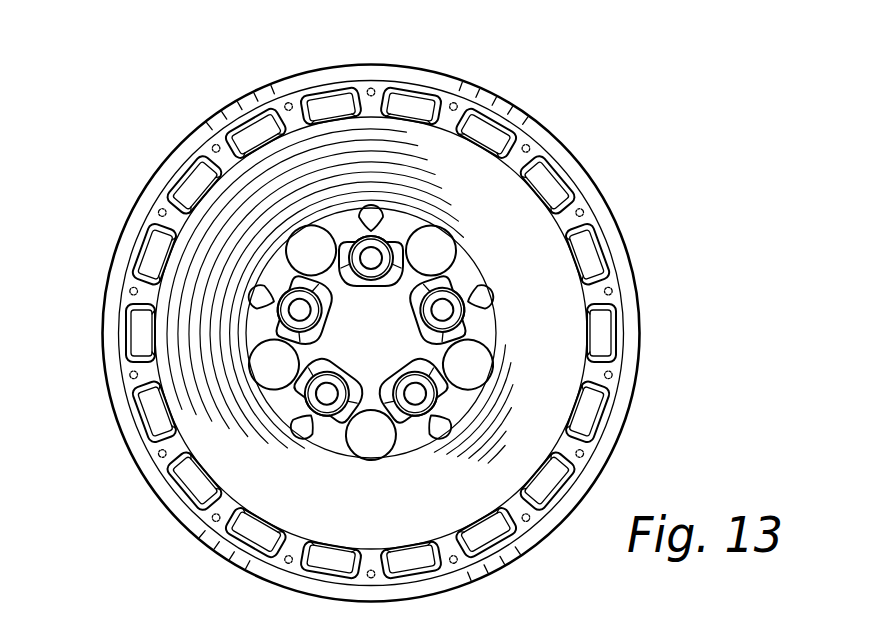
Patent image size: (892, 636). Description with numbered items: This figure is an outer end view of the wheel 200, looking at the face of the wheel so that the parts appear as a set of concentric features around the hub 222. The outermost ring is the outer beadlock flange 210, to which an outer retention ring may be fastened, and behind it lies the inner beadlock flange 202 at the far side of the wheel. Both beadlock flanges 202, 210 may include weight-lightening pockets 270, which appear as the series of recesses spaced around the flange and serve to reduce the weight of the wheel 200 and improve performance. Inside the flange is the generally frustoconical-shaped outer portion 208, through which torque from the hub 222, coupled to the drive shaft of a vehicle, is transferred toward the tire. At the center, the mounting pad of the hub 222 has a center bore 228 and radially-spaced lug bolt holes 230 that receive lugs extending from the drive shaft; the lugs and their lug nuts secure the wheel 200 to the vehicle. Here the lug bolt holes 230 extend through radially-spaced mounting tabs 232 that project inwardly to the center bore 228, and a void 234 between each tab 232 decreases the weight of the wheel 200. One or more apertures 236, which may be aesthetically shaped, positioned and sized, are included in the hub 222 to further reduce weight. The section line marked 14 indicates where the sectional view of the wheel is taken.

The section line 14- 14 is at (371, 635).
The wheel 200 is at (690, 63).
The inner beadlock flange 202 is at (660, 635).
The outer portion 208 is at (533, 442).
The outer beadlock flange 210 is at (625, 265).
The hub 222 is at (500, 200).
The center bore 228 is at (298, 247).
The lug bolt holes 230 is at (447, 300).
The mounting tabs 232 is at (290, 376).
The void 234 is at (293, 237).
The apertures 236 is at (290, 432).
The weight-lightening pockets 270 is at (410, 103).